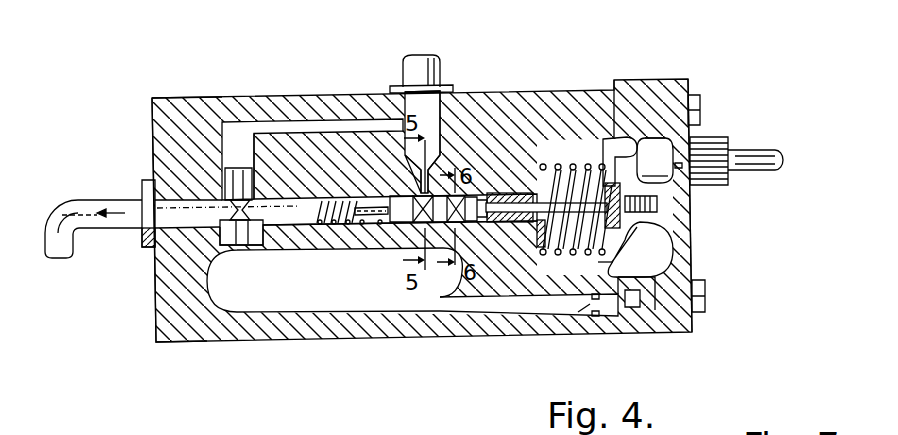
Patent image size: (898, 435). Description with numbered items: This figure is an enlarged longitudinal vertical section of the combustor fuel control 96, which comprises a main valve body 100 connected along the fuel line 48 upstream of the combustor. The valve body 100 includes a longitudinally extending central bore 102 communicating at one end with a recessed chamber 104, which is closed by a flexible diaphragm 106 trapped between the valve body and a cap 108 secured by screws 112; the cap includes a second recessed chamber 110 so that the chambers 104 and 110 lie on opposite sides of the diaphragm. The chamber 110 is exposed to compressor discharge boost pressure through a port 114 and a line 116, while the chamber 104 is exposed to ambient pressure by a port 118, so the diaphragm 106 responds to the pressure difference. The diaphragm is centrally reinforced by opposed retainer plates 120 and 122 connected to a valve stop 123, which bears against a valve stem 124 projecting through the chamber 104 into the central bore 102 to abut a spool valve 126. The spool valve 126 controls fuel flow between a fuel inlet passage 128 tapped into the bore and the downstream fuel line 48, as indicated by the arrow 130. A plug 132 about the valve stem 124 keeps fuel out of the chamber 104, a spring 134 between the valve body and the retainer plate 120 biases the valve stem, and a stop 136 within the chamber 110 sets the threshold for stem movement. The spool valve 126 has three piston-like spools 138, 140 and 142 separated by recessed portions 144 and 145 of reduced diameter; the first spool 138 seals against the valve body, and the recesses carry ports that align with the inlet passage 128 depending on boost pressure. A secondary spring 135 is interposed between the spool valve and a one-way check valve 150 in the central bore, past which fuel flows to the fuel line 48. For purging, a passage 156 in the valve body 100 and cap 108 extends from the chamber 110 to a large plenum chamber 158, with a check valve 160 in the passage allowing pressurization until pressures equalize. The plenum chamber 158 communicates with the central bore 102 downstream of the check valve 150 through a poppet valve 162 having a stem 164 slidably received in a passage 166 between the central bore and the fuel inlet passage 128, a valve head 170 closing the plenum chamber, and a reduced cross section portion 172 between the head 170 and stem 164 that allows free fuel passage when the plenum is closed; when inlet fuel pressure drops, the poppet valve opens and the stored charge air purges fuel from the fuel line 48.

The fuel line 48 is at (44, 246).
The combustor fuel control 96 is at (506, 66).
The main valve body 100 is at (186, 104).
The central bore 102 is at (274, 196).
The recessed chamber 104 is at (615, 261).
The flexible diaphragm 106 is at (641, 282).
The cap 108 is at (670, 85).
The recessed chamber 110 is at (655, 160).
The screws 112 is at (700, 97).
The port 114 is at (681, 167).
The line 116 is at (772, 148).
The port 118 is at (557, 237).
The retainer plate 120 is at (601, 142).
The retainer plate 122 is at (651, 140).
The valve stop 123 is at (592, 158).
The valve stem 124 is at (530, 190).
The spool valve 126 is at (479, 246).
The fuel inlet passage 128 is at (446, 116).
The arrow 130 is at (135, 224).
The plug 132 is at (535, 220).
The spring 134 is at (598, 262).
The secondary spring 135 is at (388, 200).
The stop 136 is at (690, 228).
The first spool 138 is at (398, 194).
The spool 140 is at (436, 194).
The spool 142 is at (482, 224).
The recessed portion 144 is at (398, 226).
The recessed portion 145 is at (476, 195).
The check valve 150 is at (320, 197).
The passage 156 is at (468, 316).
The plenum chamber 158 is at (262, 310).
The check valve 160 is at (597, 317).
The poppet valve 162 is at (211, 167).
The stem 164 is at (250, 170).
The passage 166 is at (258, 120).
The valve head 170 is at (208, 255).
The reduced cross section portion 172 is at (147, 180).